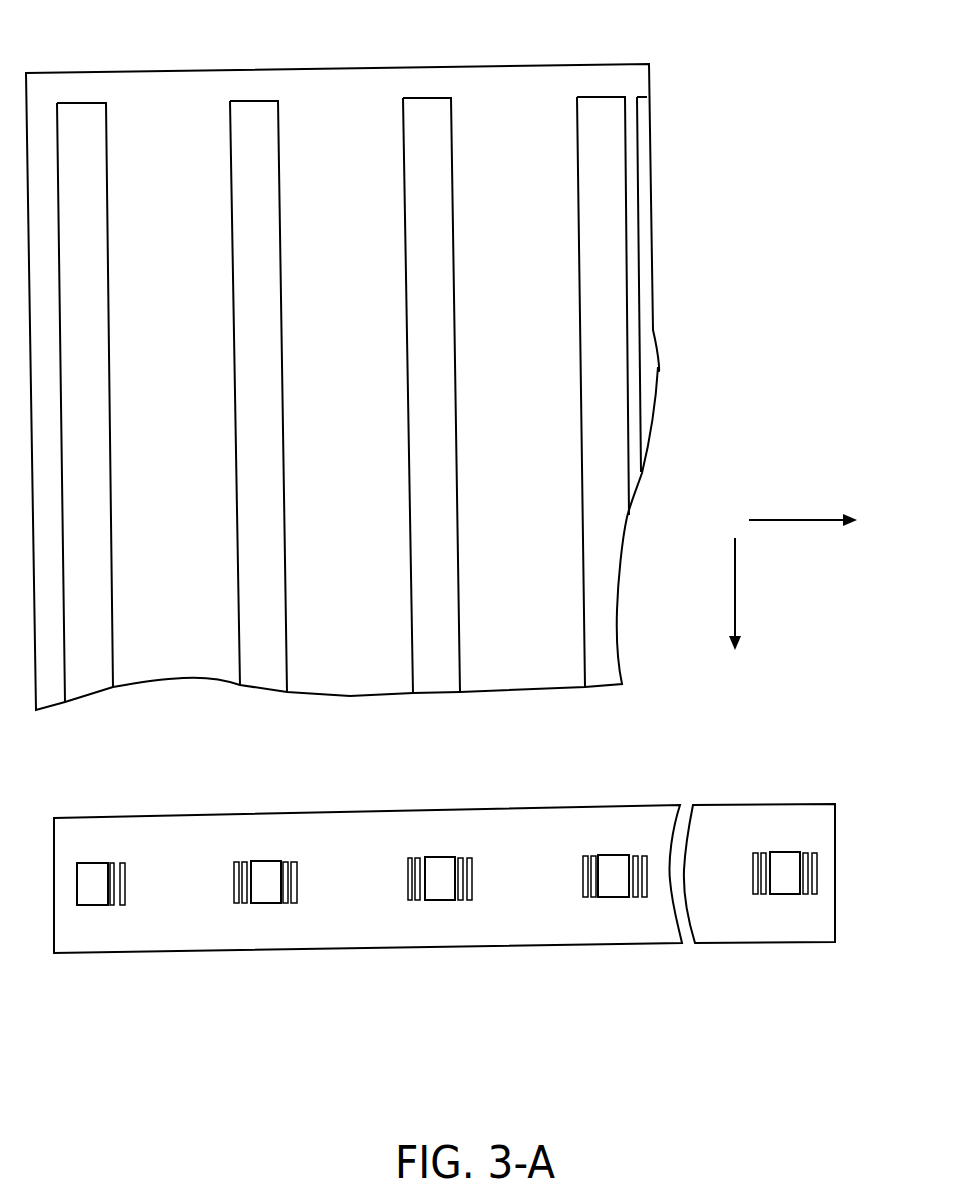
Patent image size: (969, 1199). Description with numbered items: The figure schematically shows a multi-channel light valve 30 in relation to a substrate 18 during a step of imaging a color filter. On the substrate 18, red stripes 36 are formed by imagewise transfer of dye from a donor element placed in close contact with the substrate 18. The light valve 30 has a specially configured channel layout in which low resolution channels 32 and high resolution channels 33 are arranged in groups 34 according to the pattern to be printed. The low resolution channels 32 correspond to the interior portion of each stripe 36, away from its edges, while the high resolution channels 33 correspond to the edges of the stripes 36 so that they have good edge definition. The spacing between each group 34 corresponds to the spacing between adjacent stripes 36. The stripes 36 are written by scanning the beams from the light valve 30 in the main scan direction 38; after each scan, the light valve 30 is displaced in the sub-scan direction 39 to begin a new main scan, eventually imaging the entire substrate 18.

The substrate 18 is at (518, 82).
The red stripes 36 is at (78, 122).
The sub-scan direction 39 is at (787, 520).
The main scan direction 38 is at (736, 583).
The light valve 30 is at (852, 874).
The groups 34 is at (447, 886).
The low resolution channels 32 is at (267, 903).
The high resolution channels 33 is at (237, 903).